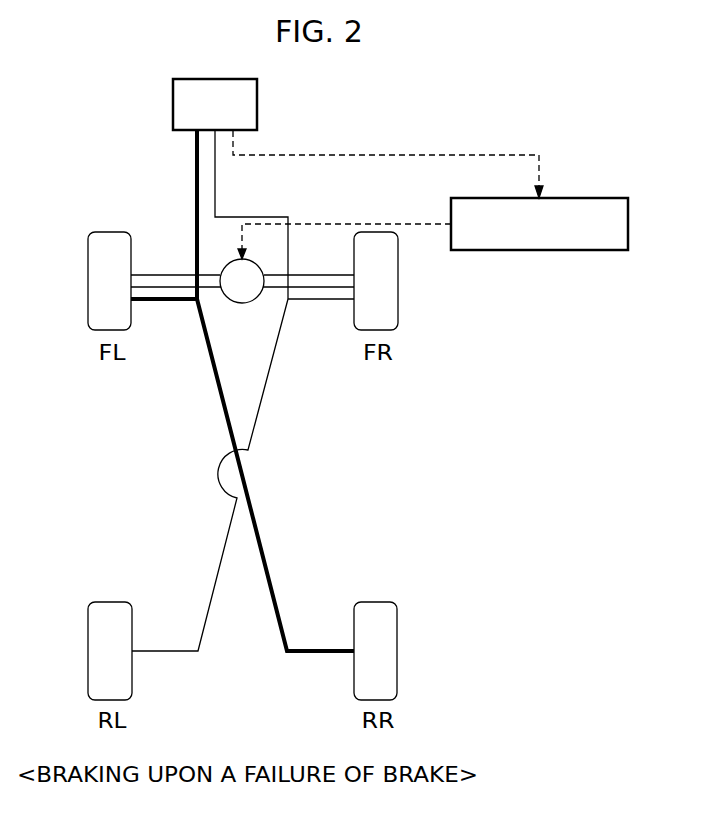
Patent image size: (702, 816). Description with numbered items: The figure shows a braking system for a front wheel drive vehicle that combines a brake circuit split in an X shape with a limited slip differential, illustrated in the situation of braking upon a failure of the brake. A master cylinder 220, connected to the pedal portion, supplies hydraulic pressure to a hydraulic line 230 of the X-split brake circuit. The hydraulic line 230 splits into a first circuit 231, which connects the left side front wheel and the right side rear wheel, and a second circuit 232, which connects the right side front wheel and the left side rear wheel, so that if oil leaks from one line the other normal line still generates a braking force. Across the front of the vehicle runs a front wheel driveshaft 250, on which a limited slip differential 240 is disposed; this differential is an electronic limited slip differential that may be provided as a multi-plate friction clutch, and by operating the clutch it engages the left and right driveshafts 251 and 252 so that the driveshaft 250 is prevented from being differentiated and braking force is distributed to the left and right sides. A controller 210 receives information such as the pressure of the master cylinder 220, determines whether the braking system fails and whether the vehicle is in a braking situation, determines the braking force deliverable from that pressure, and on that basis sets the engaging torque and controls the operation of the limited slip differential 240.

The controller 210 is at (538, 252).
The master cylinder 220 is at (257, 105).
The hydraulic line 230 is at (269, 475).
The first circuit 231 is at (258, 527).
The second circuit 232 is at (357, 528).
The limited slip differential 240 is at (228, 263).
The driveshaft 250 is at (234, 350).
The left driveshaft 251 is at (166, 280).
The right driveshaft 252 is at (303, 285).